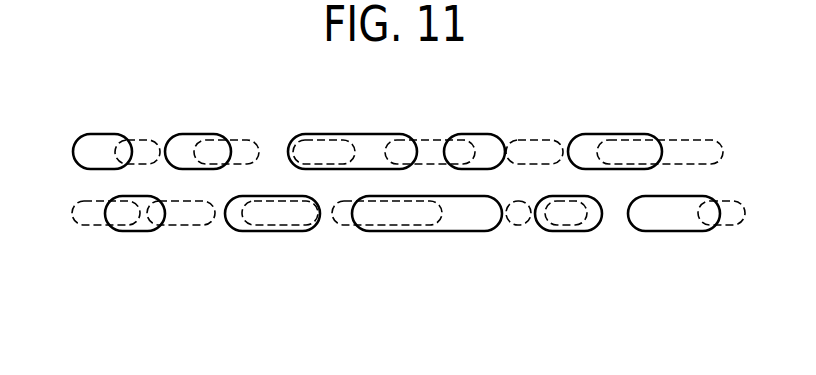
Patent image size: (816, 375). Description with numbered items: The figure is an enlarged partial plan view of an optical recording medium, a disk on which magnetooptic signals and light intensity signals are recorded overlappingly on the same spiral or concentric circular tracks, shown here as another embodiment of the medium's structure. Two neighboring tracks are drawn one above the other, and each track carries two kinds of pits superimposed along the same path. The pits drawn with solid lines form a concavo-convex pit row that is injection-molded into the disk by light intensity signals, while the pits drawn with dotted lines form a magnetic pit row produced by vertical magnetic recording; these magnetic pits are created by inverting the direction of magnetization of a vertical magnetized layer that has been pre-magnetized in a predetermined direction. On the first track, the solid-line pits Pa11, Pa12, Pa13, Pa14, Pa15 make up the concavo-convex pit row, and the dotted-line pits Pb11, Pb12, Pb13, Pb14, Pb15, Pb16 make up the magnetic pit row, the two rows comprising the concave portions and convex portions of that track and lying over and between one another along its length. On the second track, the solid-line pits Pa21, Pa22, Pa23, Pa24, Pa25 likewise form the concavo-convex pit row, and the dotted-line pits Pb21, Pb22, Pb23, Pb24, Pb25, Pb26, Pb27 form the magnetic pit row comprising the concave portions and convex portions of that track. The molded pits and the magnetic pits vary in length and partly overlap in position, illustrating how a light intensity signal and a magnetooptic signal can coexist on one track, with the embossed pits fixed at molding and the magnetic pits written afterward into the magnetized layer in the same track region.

The pit of first track concavo-convex pit row Pa11 is at (105, 133).
The pit of first track concavo-convex pit row Pa12 is at (200, 133).
The pit of first track concavo-convex pit row Pa13 is at (358, 134).
The pit of first track concavo-convex pit row Pa14 is at (479, 134).
The pit of first track concavo-convex pit row Pa15 is at (618, 134).
The magnetic pit of first track magnetic pit row Pb11 is at (143, 167).
The magnetic pit of first track magnetic pit row Pb12 is at (240, 167).
The magnetic pit of first track magnetic pit row Pb13 is at (340, 167).
The magnetic pit of first track magnetic pit row Pb14 is at (432, 167).
The magnetic pit of first track magnetic pit row Pb15 is at (548, 167).
The magnetic pit of first track magnetic pit row Pb16 is at (695, 167).
The pit of second track concavo-convex pit row Pa21 is at (130, 231).
The pit of second track concavo-convex pit row Pa22 is at (240, 231).
The pit of second track concavo-convex pit row Pa23 is at (452, 231).
The pit of second track concavo-convex pit row Pa24 is at (552, 231).
The pit of second track concavo-convex pit row Pa25 is at (665, 231).
The magnetic pit of second track magnetic pit row Pb21 is at (95, 225).
The magnetic pit of second track magnetic pit row Pb22 is at (183, 225).
The magnetic pit of second track magnetic pit row Pb23 is at (283, 225).
The magnetic pit of second track magnetic pit row Pb24 is at (345, 225).
The magnetic pit of second track magnetic pit row Pb25 is at (513, 225).
The magnetic pit of second track magnetic pit row Pb26 is at (585, 225).
The magnetic pit of second track magnetic pit row Pb27 is at (725, 225).